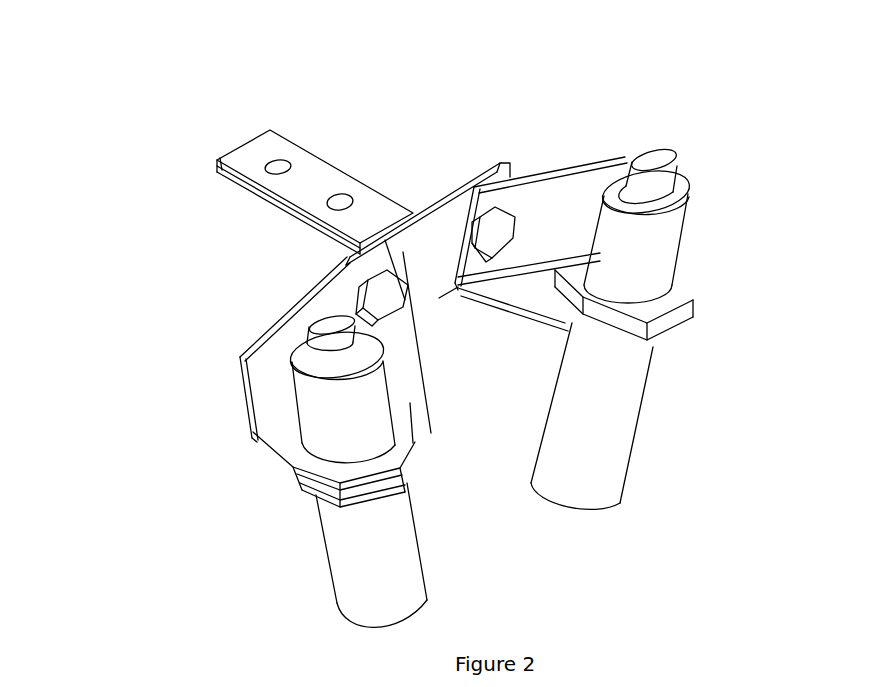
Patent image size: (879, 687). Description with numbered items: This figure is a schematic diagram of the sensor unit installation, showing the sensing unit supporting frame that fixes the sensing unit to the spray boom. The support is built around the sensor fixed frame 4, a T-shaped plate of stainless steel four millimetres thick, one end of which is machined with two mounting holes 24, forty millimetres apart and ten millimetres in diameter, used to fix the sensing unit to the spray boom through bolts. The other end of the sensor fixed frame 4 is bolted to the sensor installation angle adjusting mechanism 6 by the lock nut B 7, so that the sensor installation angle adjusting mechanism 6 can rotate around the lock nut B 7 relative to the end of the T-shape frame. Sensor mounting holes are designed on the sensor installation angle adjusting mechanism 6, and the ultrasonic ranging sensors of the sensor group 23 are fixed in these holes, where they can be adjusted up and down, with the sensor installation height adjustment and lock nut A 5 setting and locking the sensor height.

The sensor fixed frame 4 is at (228, 153).
The mounting holes 24 is at (290, 170).
The sensor installation angle adjusting mechanism 6 is at (338, 304).
The lock nut B 7 is at (385, 297).
The sensor group 23 is at (347, 412).
The sensor installation height adjustment and lock nut A 5 is at (312, 490).